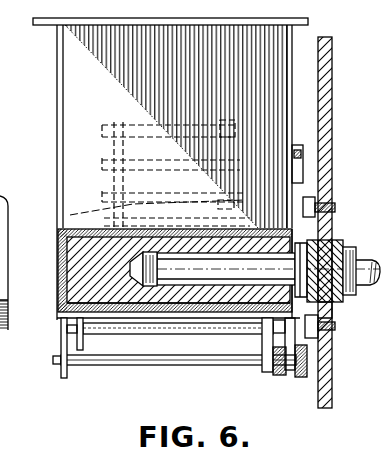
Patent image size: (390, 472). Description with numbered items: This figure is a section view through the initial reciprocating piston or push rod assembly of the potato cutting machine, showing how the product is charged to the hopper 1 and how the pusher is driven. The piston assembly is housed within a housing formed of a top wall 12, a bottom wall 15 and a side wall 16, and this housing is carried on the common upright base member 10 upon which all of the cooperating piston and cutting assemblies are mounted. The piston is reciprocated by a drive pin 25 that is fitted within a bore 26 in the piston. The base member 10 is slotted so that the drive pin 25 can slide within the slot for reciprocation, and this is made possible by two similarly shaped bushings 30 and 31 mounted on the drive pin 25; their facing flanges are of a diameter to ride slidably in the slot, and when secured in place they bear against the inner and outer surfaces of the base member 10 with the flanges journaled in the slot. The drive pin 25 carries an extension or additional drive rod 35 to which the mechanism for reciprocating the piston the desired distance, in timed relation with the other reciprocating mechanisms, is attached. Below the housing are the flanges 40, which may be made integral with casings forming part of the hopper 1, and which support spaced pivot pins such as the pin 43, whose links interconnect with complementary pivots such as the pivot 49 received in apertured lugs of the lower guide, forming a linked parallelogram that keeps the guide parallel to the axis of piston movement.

The hopper 1 is at (53, 109).
The upright base member 10 is at (331, 104).
The top wall 12 is at (93, 228).
The side wall 16 is at (60, 278).
The drive pin 25 is at (238, 262).
The bore 26 is at (142, 280).
The bushing 31 is at (334, 246).
The drive rod 35 is at (361, 263).
The bushing 30 is at (340, 299).
The bottom wall 15 is at (232, 308).
The pivot 49 is at (182, 328).
The pin 43 is at (170, 365).
The flange 40 is at (62, 368).